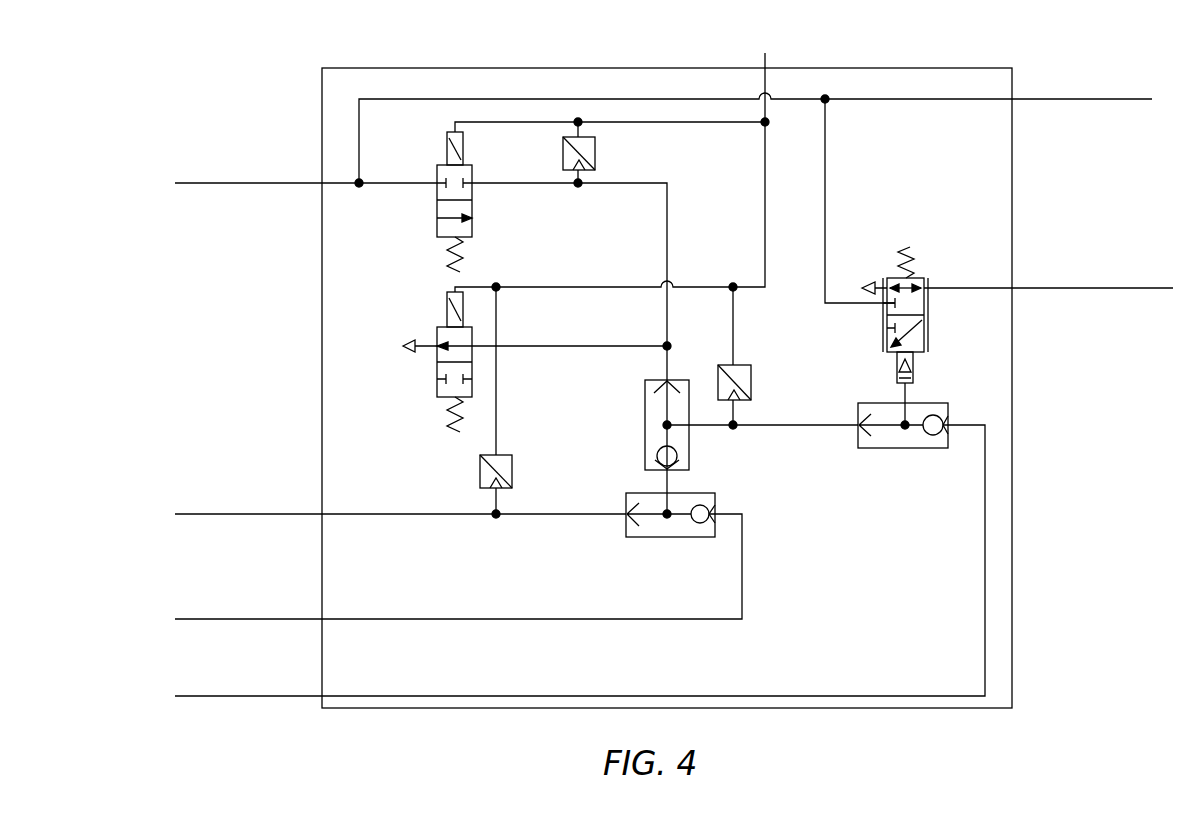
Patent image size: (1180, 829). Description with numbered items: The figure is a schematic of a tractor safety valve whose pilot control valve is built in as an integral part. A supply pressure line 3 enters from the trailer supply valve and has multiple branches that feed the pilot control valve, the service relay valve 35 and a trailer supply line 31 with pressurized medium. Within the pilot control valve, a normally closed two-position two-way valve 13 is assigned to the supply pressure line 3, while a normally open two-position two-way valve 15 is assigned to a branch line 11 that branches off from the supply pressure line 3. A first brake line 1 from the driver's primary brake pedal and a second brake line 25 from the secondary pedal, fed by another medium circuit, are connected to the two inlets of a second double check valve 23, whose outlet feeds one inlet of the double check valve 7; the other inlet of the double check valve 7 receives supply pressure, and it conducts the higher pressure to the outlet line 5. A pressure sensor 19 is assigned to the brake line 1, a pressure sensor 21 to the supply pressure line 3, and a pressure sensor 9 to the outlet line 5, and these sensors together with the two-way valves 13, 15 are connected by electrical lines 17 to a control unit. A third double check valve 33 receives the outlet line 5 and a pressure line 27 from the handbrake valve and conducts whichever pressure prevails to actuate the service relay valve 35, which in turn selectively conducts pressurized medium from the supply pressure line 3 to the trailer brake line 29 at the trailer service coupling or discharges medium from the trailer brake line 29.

The brake line 1 is at (398, 481).
The supply pressure line 3 is at (421, 251).
The outlet line 5 is at (803, 425).
The double check valve 7 is at (689, 444).
The pressure sensor 9 is at (718, 378).
The branch line 11 is at (593, 346).
The 2/2-way valve 13 is at (437, 178).
The 2/2-way valve 15 is at (472, 386).
The electrical lines 17 is at (645, 153).
The pressure sensor 19 is at (512, 478).
The pressure sensor 21 is at (563, 156).
The second double check valve 23 is at (715, 504).
The second brake line 25 is at (456, 566).
The pressure line 27 is at (580, 560).
The trailer brake line 29 is at (1017, 267).
The trailer supply line 31 is at (758, 119).
The third double check valve 33 is at (915, 448).
The service relay valve 35 is at (924, 320).